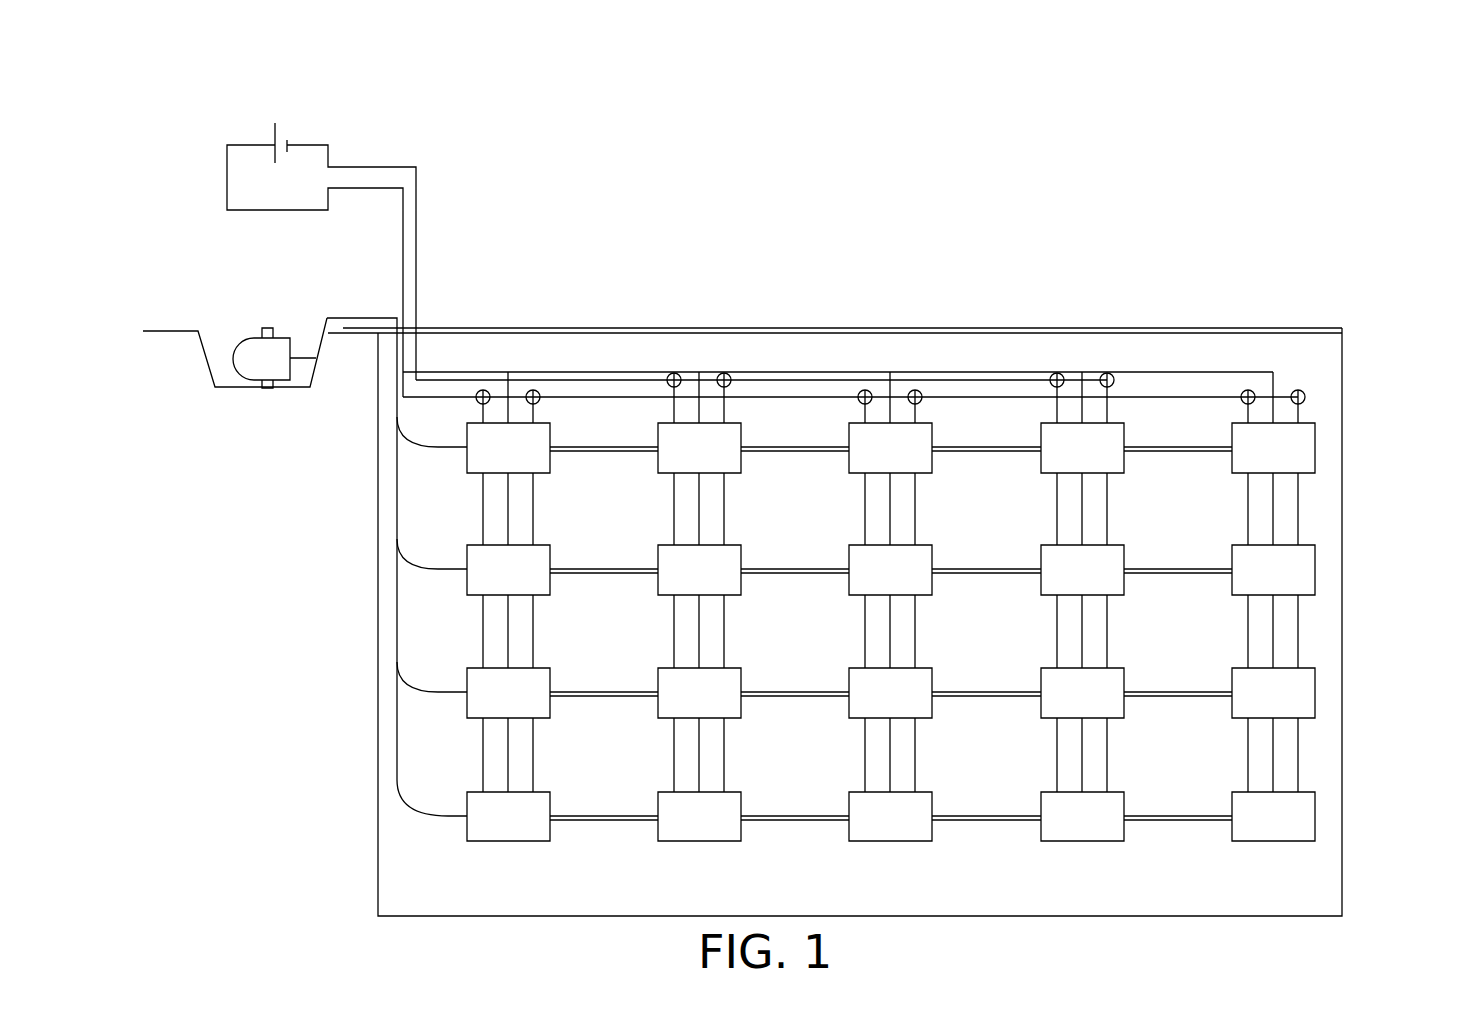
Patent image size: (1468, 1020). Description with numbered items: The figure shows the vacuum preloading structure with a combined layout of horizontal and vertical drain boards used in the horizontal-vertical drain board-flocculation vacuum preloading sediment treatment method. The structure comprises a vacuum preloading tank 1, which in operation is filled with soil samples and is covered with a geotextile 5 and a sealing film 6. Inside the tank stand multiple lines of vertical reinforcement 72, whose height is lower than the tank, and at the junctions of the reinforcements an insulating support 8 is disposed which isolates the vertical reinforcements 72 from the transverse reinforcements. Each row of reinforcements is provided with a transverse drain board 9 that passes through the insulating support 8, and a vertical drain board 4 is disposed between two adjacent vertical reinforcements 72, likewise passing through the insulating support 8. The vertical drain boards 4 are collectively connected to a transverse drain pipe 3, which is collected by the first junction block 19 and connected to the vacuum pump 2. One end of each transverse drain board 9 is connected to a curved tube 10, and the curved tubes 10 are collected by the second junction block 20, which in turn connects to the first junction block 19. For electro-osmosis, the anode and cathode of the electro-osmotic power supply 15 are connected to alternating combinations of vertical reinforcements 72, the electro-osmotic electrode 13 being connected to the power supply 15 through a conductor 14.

The vacuum preloading tank 1 is at (1342, 757).
The vacuum pump 2 is at (262, 363).
The transverse drain pipe 3 is at (953, 372).
The vertical drain board 4 is at (1273, 645).
The geotextile 5 is at (443, 333).
The sealing film 6 is at (503, 328).
The insulating support 8 is at (1317, 580).
The transverse drain board 9 is at (1170, 447).
The curved tube 10 is at (433, 693).
The electro-osmotic electrode 13 is at (1308, 398).
The conductor 14 is at (1155, 397).
The electro-osmotic power supply 15 is at (247, 143).
The first junction block 19 is at (397, 363).
The second junction block 20 is at (397, 493).
The vertical reinforcement 72 is at (1302, 516).